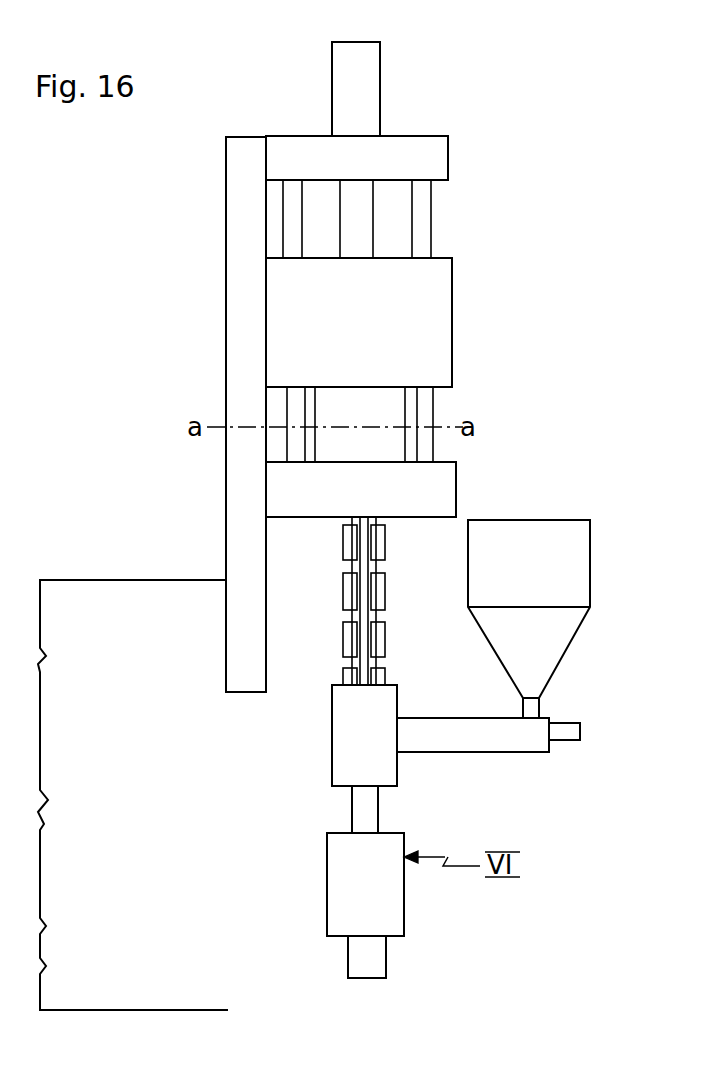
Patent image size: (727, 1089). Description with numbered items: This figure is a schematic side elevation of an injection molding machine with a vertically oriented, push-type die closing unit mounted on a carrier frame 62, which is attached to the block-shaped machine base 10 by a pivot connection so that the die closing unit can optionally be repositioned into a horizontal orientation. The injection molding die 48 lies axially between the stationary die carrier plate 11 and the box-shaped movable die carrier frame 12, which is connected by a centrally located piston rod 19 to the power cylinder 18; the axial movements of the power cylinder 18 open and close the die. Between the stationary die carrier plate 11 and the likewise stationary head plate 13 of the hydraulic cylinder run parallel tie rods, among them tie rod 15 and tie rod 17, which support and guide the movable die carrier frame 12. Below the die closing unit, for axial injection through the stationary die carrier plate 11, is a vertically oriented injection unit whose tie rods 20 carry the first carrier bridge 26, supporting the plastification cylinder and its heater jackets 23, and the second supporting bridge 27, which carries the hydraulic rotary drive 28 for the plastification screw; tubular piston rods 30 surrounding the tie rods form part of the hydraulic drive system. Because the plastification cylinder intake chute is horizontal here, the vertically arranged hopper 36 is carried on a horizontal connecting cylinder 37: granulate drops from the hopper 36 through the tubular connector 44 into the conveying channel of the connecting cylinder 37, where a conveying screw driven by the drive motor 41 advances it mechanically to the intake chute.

The machine base 10 is at (120, 618).
The stationary die carrier plate 11 is at (398, 487).
The movable die carrier frame 12 is at (420, 315).
The head plate 13 is at (397, 150).
The tie rod 15 is at (292, 203).
The tie rod 17 is at (422, 198).
The power cylinder 18 is at (350, 85).
The piston rod 19 is at (355, 207).
The tie rod 20 is at (362, 552).
The heater jackets 23 is at (372, 613).
The first carrier bridge 26 is at (360, 713).
The second supporting bridge 27 is at (375, 890).
The hydraulic rotary drive 28 is at (365, 967).
The tubular piston rods 30 is at (365, 808).
The hopper 36 is at (503, 557).
The connecting cylinder 37 is at (483, 735).
The drive motor 41 is at (568, 735).
The tubular connector 44 is at (530, 708).
The injection molding die 48 is at (360, 447).
The carrier frame 62 is at (242, 315).